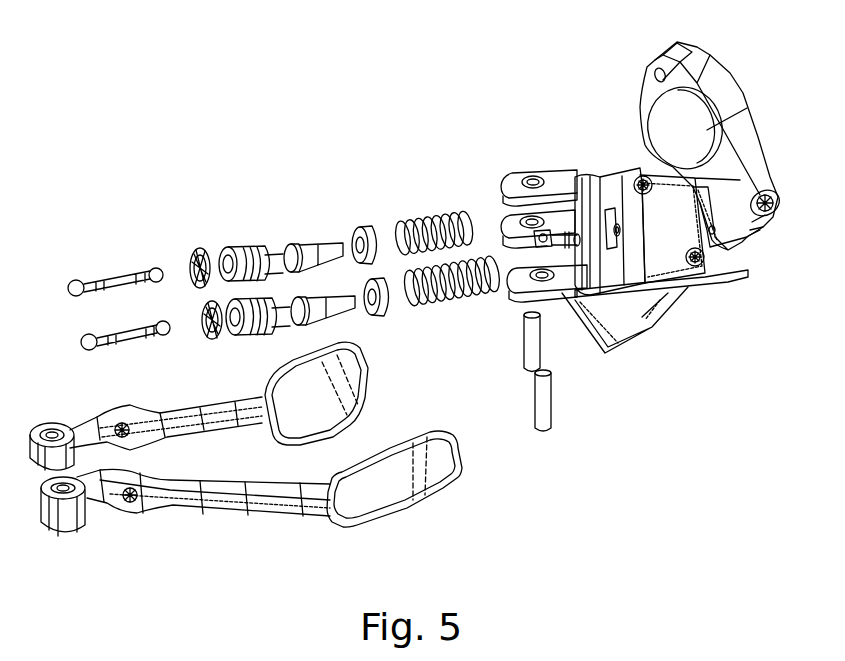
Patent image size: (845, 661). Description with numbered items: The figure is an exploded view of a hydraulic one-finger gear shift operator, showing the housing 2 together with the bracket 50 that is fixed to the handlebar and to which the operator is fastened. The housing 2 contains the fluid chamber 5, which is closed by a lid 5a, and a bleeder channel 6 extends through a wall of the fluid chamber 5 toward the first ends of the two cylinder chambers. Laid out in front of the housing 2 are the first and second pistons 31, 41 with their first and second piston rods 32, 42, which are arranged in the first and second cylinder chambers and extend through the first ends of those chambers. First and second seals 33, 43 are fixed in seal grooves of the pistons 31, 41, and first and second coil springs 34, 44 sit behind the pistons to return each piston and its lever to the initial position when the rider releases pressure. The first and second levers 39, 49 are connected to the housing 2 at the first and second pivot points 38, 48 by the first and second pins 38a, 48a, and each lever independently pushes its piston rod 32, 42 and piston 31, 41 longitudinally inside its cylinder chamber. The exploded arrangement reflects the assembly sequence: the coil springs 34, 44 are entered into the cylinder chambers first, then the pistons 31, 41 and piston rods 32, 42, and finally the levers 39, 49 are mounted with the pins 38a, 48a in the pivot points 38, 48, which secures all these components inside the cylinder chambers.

The housing 2 is at (728, 276).
The fluid chamber 5 is at (640, 280).
The lid 5a is at (684, 235).
The bleeder channel 6 is at (570, 220).
The first piston 31 is at (252, 238).
The first piston rod 32 is at (115, 268).
The first seal 33 is at (360, 228).
The first coil spring 34 is at (440, 218).
The first pivot point 38 is at (533, 173).
The first pin 38a is at (542, 338).
The first lever 39 is at (338, 388).
The second piston 41 is at (265, 293).
The second piston rod 42 is at (127, 325).
The second seal 43 is at (372, 280).
The second coil spring 44 is at (457, 265).
The second pivot point 48 is at (548, 215).
The second pin 48a is at (548, 405).
The second lever 49 is at (372, 505).
The bracket 50 is at (722, 82).